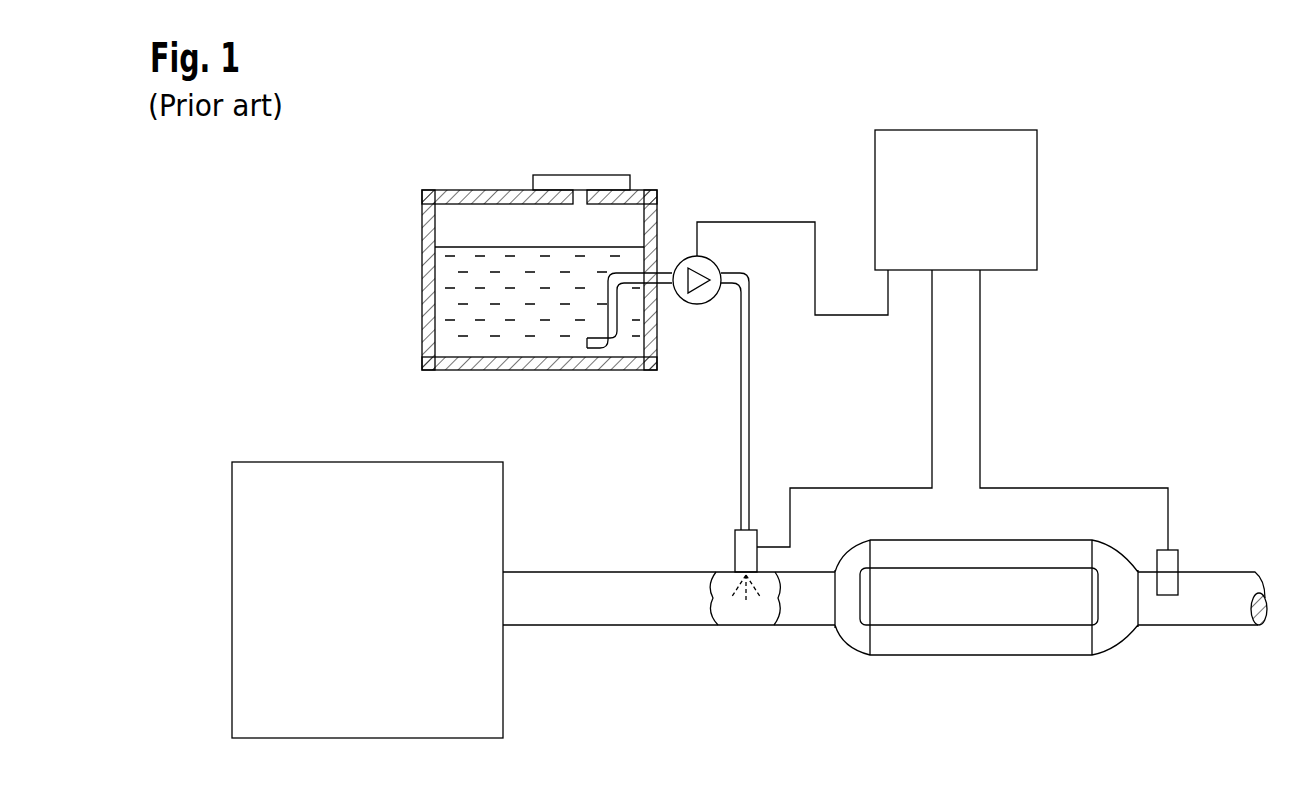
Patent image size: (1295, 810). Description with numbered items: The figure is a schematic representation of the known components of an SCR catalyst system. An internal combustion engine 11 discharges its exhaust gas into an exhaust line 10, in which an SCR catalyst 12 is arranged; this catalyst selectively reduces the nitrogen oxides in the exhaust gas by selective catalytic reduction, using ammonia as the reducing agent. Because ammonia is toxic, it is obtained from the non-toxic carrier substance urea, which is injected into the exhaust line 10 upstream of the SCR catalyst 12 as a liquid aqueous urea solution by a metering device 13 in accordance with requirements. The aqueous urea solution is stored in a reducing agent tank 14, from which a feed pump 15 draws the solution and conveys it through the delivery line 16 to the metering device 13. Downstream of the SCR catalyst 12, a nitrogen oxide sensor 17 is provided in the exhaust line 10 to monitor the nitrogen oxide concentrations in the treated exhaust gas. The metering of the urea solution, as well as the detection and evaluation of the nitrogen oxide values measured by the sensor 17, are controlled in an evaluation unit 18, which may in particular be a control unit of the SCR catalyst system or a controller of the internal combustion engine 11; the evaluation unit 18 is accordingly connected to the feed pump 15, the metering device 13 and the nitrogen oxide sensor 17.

The exhaust line 10 is at (552, 588).
The internal combustion engine 11 is at (276, 488).
The SCR catalyst 12 is at (976, 640).
The metering device 13 is at (735, 539).
The reducing agent tank 14 is at (422, 226).
The feed pump 15 is at (697, 305).
The delivery line 16 is at (750, 407).
The nitrogen oxide sensor 17 is at (1180, 550).
The evaluation unit 18 is at (1037, 197).